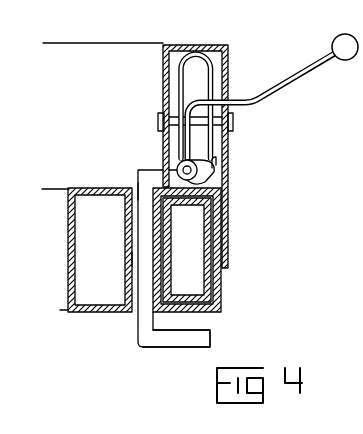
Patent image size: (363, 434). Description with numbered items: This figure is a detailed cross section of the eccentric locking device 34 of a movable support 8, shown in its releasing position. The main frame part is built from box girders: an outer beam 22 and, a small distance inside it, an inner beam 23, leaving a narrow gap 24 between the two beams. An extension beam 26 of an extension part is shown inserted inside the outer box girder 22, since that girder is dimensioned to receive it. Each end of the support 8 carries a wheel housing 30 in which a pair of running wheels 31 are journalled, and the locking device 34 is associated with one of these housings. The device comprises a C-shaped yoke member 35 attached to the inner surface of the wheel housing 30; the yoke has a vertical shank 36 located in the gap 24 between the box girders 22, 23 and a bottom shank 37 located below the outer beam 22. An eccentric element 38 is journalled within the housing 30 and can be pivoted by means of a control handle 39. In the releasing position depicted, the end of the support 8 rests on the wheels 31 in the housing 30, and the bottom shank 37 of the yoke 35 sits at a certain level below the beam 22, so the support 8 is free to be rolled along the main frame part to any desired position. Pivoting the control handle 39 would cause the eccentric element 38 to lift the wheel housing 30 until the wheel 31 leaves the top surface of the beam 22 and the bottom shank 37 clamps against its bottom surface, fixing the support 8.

The support 8 is at (108, 43).
The outer beam 22 is at (216, 298).
The inner beam 23 is at (68, 247).
The gap 24 is at (137, 186).
The extension beam 26 is at (212, 271).
The wheel housing 30 is at (164, 80).
The running wheel 31 is at (194, 57).
The locking device 34 is at (243, 118).
The C-shaped yoke member 35 is at (133, 350).
The vertical shank 36 is at (140, 259).
The bottom shank 37 is at (175, 338).
The eccentric element 38 is at (222, 173).
The control handle 39 is at (284, 80).